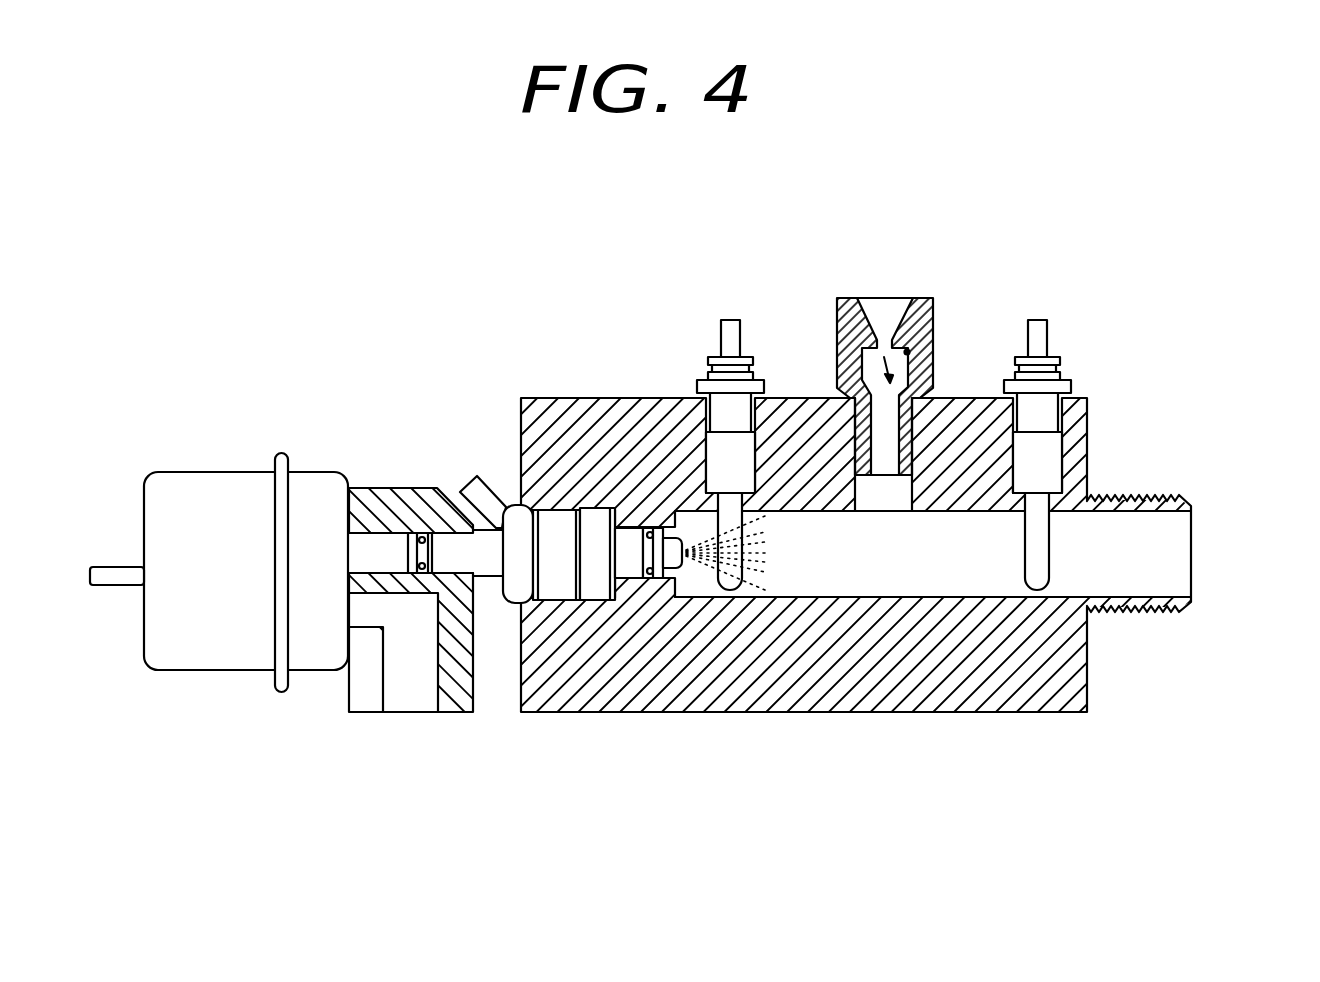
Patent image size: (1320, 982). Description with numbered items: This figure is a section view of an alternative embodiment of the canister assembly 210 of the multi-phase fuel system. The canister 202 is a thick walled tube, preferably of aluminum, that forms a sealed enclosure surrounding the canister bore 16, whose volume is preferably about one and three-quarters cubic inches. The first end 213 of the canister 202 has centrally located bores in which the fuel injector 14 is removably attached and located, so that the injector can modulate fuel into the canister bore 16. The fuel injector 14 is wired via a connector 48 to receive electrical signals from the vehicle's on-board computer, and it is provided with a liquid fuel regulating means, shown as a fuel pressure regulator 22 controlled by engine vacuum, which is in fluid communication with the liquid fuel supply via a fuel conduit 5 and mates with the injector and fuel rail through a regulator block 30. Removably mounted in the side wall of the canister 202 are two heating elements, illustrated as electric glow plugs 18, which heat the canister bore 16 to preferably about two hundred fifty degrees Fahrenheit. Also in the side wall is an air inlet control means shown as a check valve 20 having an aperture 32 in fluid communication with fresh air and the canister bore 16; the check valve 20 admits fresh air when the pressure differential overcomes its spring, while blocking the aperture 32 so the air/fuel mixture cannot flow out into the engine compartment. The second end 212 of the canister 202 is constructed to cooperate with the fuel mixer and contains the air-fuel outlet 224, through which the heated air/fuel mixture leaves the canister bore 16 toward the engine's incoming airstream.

The canister assembly 210 is at (494, 200).
The fuel pressure regulator 22 is at (160, 472).
The regulator block 30 is at (378, 488).
The connector 48 is at (476, 476).
The first end 213 is at (520, 422).
The electric glow plugs 18 is at (697, 385).
The aperture 32 is at (870, 343).
The check valve 20 is at (933, 315).
The fuel conduit 5 is at (382, 700).
The fuel injector 14 is at (516, 603).
The canister 202 is at (793, 712).
The canister bore 16 is at (902, 573).
The air-fuel outlet 224 is at (1192, 577).
The second end 212 is at (771, 568).